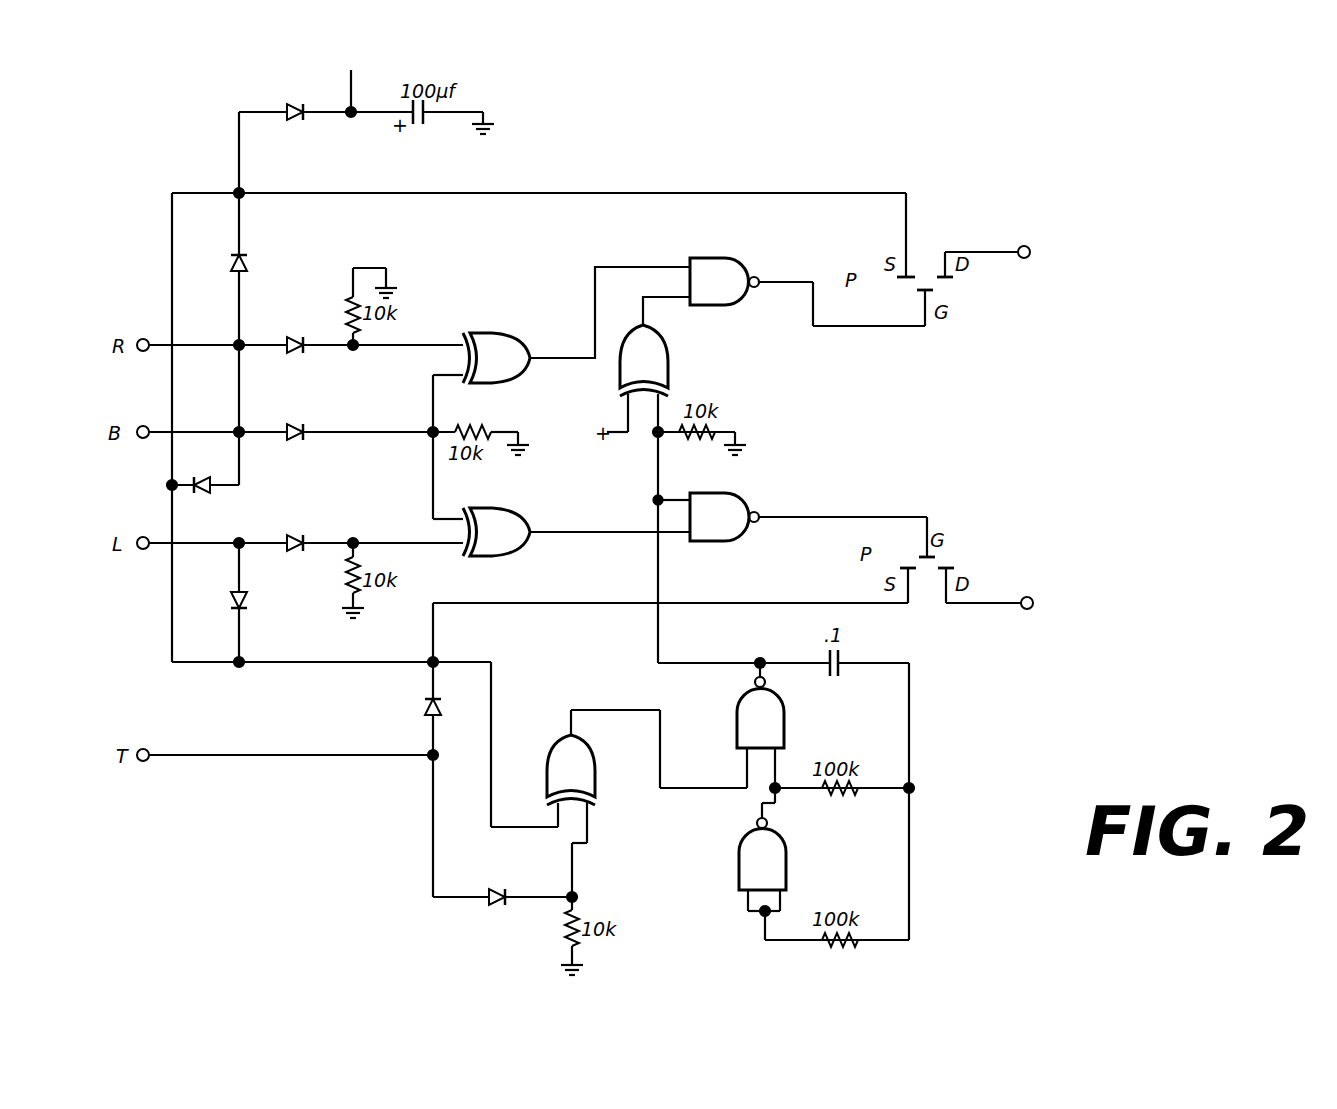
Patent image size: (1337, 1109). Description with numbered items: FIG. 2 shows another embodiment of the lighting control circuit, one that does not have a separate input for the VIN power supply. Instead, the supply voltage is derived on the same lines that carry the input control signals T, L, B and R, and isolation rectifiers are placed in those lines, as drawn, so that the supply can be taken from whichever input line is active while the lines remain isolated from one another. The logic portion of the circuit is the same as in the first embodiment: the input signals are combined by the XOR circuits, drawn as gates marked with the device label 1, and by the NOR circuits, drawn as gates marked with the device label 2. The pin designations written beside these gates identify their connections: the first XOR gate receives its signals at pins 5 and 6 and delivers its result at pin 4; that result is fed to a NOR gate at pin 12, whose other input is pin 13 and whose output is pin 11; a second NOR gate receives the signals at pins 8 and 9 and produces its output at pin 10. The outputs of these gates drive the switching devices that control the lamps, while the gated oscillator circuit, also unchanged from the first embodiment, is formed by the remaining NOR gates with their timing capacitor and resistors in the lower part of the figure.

The exclusive-OR gate IC 1 is at (565, 565).
The NAND gate IC 2 is at (738, 574).
The pin 4 output of exclusive-OR gate 4 is at (610, 312).
The pin 5 input of exclusive-OR gate 5 is at (448, 386).
The pin 6 input of exclusive-OR gate 6 is at (431, 332).
The pin 8 input of NAND gate 8 is at (671, 490).
The pin 9 input of NAND gate 9 is at (610, 544).
The pin 10 output of NAND gate 10 is at (843, 502).
The pin 11 output of NAND gate 11 is at (786, 296).
The pin 12 input of NAND gate 12 is at (642, 254).
The pin 13 input of NAND gate 13 is at (666, 311).